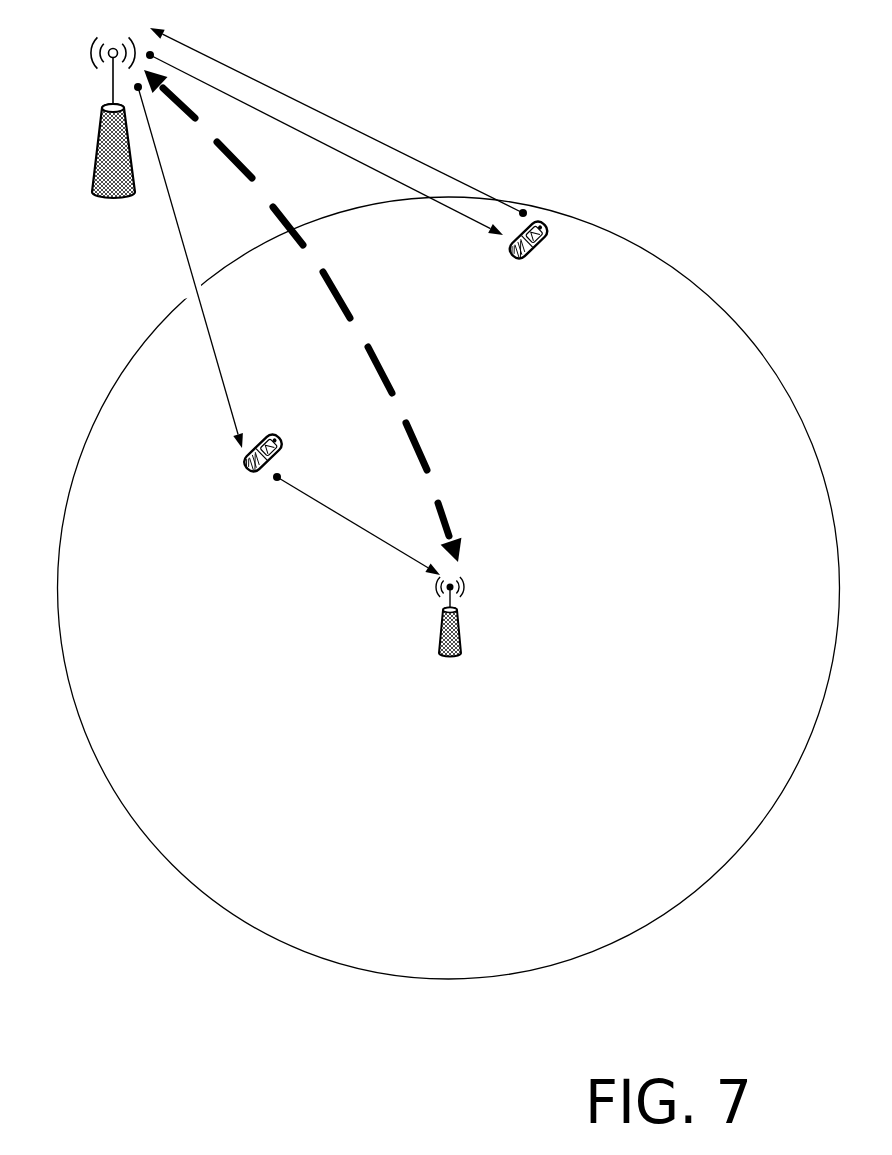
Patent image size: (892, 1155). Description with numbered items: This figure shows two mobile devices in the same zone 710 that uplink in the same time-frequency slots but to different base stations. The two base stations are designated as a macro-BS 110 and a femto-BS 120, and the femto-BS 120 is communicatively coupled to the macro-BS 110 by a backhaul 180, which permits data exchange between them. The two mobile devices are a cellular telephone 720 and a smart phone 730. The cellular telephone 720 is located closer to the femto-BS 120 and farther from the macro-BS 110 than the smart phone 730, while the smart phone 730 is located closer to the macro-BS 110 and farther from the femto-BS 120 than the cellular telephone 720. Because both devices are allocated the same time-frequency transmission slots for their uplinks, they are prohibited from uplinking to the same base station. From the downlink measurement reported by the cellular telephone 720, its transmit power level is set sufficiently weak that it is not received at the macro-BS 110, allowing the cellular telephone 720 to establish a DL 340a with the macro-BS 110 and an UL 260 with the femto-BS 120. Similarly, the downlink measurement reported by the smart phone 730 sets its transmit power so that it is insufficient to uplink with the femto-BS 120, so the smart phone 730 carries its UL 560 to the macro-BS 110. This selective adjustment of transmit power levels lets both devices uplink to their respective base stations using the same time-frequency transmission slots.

The macro-BS 110 is at (108, 53).
The femto-BS 120 is at (458, 587).
The backhaul 180 is at (302, 316).
The UL 260 is at (356, 524).
The DL 340a is at (318, 249).
The UL 560 is at (338, 122).
The zone 710 is at (735, 355).
The cellular telephone 720 is at (279, 448).
The smart phone 730 is at (546, 236).